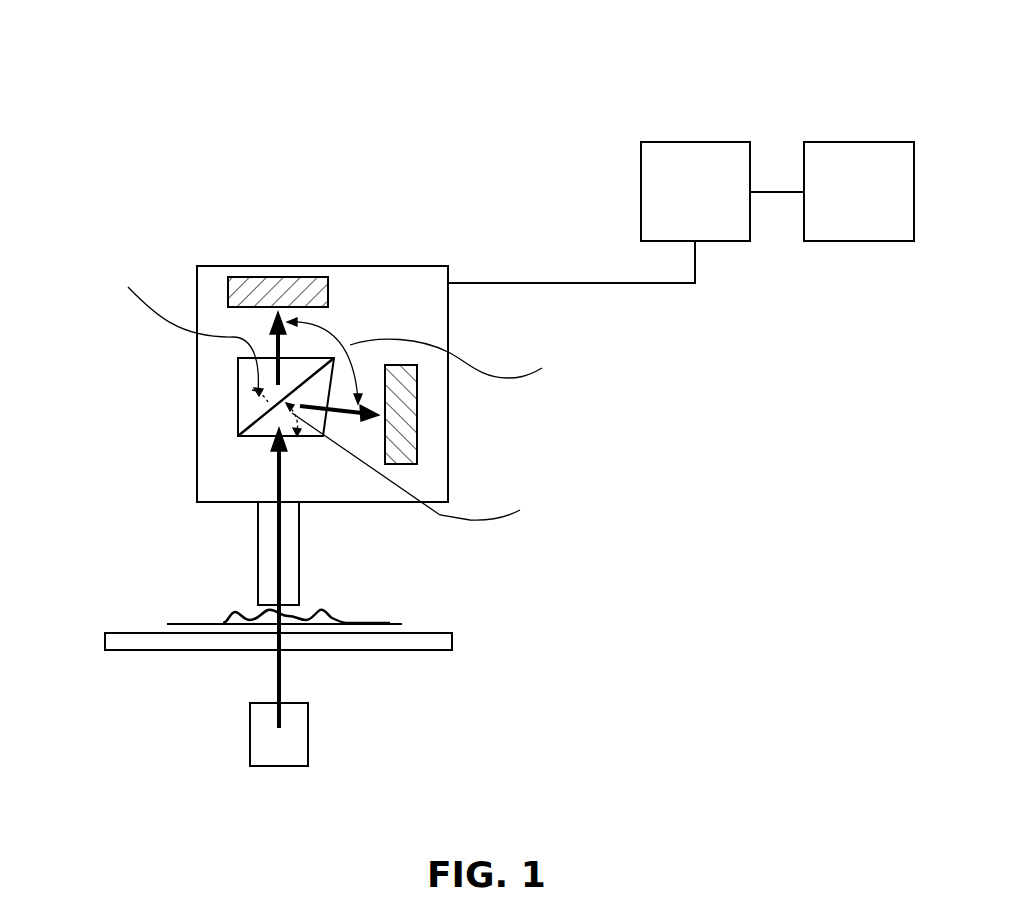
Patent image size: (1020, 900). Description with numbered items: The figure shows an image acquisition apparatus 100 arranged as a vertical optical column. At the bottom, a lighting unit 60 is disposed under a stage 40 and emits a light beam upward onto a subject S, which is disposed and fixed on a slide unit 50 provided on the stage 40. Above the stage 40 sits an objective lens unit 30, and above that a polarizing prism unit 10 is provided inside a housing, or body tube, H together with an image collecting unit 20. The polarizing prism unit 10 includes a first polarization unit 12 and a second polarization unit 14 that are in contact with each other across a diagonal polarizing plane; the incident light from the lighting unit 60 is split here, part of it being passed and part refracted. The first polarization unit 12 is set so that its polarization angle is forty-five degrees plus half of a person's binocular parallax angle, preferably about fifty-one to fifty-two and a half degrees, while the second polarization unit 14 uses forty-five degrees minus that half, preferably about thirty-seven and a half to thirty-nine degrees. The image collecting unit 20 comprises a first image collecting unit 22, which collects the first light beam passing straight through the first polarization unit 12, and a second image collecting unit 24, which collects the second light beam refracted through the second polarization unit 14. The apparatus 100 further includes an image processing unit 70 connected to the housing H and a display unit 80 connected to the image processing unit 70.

The image acquisition apparatus 100 is at (178, 37).
The housing H is at (422, 266).
The image processing unit 70 is at (695, 191).
The display unit 80 is at (859, 191).
The image collecting unit 20 is at (418, 127).
The first image collecting unit 22 is at (275, 287).
The second image collecting unit 24 is at (398, 370).
The polarizing prism unit 10 is at (87, 357).
The first polarization unit 12 is at (247, 375).
The second polarization unit 14 is at (270, 425).
The objective lens unit 30 is at (292, 547).
The subject S is at (227, 620).
The slide unit 50 is at (390, 622).
The stage 40 is at (442, 640).
The lighting unit 60 is at (297, 735).